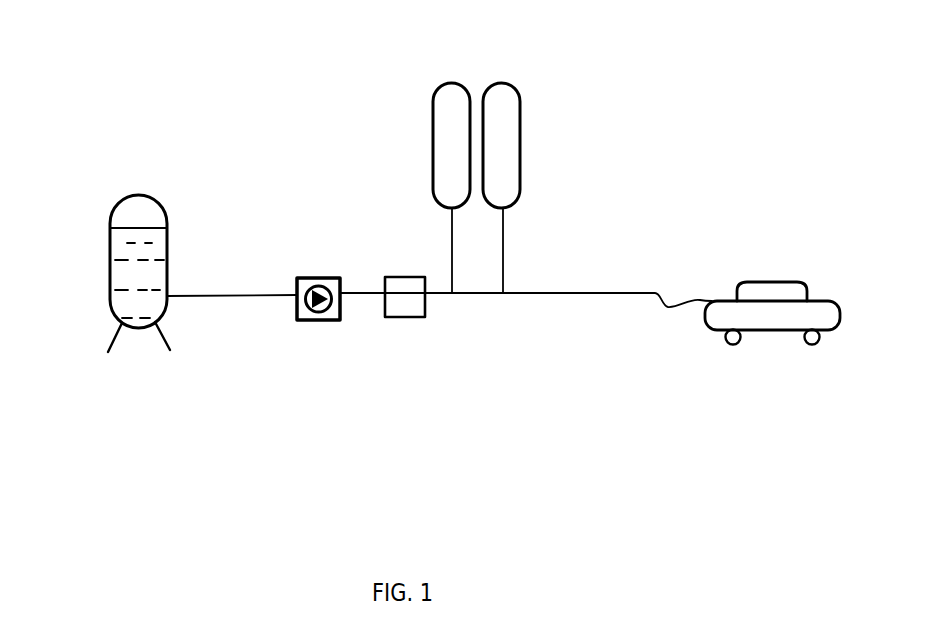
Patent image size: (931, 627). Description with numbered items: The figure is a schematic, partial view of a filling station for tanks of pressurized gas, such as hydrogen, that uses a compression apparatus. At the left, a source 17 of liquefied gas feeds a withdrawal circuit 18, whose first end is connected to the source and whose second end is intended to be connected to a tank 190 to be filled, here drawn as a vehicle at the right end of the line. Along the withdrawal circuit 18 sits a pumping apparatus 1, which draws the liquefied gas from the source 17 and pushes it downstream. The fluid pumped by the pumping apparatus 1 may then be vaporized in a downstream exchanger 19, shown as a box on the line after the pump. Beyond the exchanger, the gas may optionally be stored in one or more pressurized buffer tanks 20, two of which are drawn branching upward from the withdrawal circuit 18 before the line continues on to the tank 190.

The pumping apparatus 1 is at (318, 322).
The source of liquefied gas 17 is at (132, 297).
The withdrawal circuit 18 is at (243, 296).
The downstream exchanger 19 is at (410, 302).
The pressurized buffer tanks 20 is at (448, 152).
The tank to be filled 190 is at (783, 310).